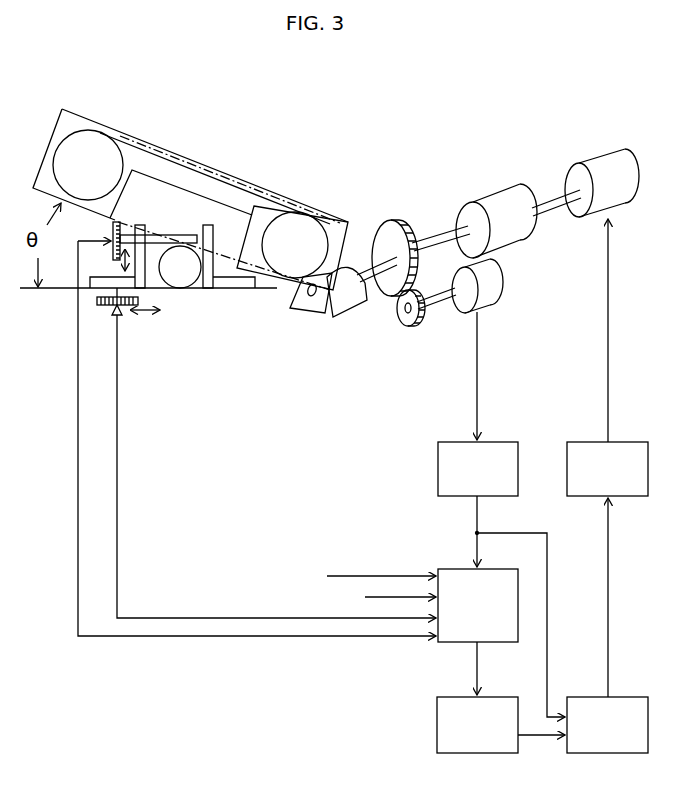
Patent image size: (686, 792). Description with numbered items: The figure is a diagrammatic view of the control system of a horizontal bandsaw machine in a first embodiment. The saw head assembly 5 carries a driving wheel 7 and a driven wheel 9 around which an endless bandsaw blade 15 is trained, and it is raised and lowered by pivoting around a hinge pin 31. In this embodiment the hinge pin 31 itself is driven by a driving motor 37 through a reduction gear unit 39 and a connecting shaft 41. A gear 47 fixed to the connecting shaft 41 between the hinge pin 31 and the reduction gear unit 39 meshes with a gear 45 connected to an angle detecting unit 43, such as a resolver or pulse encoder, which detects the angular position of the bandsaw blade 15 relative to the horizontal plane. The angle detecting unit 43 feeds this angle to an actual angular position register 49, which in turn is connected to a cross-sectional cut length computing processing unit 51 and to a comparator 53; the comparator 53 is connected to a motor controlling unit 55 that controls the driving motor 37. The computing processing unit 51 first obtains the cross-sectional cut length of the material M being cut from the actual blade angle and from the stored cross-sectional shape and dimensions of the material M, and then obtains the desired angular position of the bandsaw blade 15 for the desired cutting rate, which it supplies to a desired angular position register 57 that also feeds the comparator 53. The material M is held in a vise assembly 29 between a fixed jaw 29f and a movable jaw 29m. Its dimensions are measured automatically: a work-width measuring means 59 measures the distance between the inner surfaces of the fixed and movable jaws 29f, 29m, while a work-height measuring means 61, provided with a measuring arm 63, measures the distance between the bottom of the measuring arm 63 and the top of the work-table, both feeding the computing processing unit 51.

The saw head assembly 5 is at (190, 154).
The driving wheel 7 is at (318, 214).
The driven wheel 9 is at (78, 130).
The bandsaw blade 15 is at (177, 158).
The vise assembly 29 is at (224, 226).
The movable jaw 29m is at (143, 273).
The material M is at (187, 282).
The fixed jaw 29f is at (212, 270).
The hinge pin 31 is at (313, 280).
The driving motor 37 is at (605, 158).
The reduction gear unit 39 is at (495, 192).
The connecting shaft 41 is at (437, 239).
The angle detecting unit 43 is at (496, 297).
The gear 45 is at (414, 323).
The gear 47 is at (381, 236).
The actual angular position register 49 is at (478, 404).
The cross-sectional cut length computing processing unit 51 is at (446, 606).
The comparator 53 is at (583, 625).
The motor controlling unit 55 is at (607, 357).
The desired angular position register 57 is at (477, 697).
The work-width measuring means 59 is at (266, 453).
The work-height measuring means 61 is at (257, 360).
The measuring arm 63 is at (158, 237).